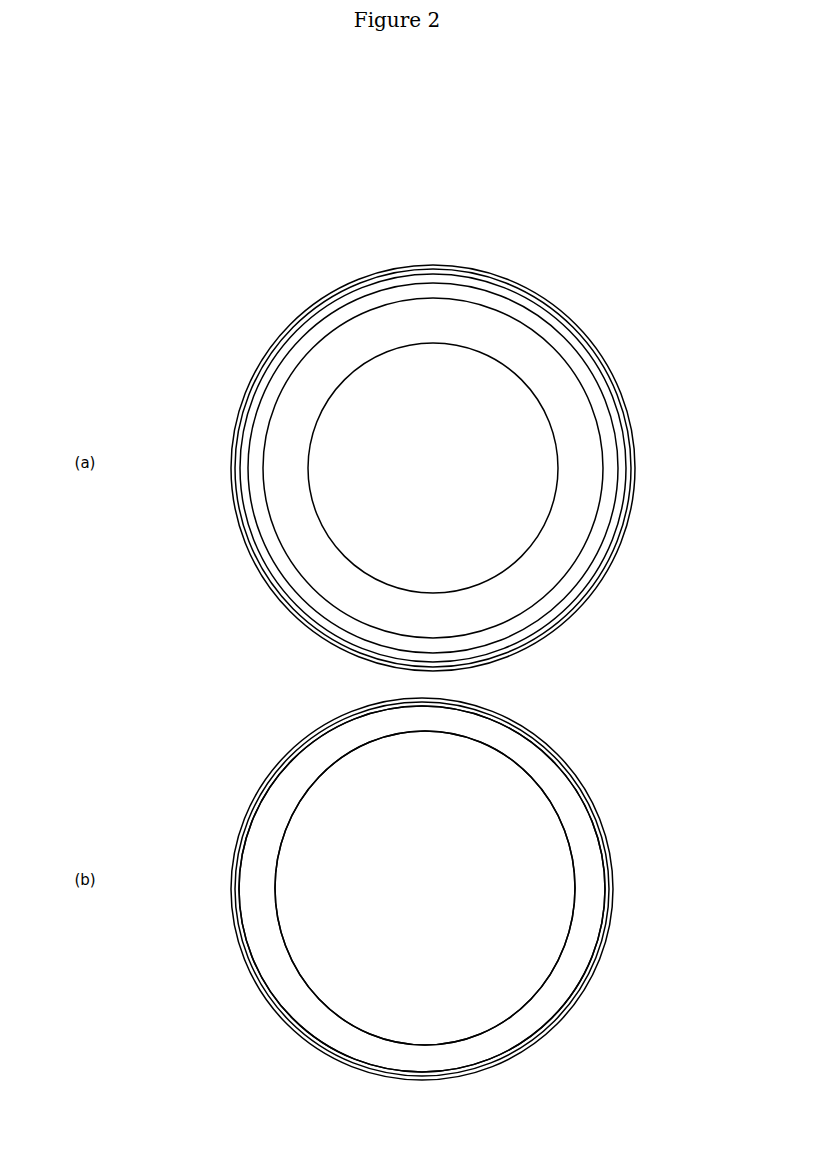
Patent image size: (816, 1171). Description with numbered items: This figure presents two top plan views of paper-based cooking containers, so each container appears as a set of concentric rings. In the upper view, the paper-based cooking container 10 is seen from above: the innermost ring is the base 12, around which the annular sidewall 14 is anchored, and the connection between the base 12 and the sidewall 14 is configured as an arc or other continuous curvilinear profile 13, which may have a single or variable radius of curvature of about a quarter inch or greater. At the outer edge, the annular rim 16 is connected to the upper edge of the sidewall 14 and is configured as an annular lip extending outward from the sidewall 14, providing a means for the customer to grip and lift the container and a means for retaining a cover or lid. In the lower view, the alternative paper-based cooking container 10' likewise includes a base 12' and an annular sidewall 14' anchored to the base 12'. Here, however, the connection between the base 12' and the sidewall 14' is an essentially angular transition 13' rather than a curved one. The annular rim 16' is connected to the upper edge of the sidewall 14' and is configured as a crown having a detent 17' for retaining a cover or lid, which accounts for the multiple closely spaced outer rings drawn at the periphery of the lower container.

The paper-based cooking container 10 is at (411, 468).
The base 12 is at (507, 474).
The continuous curvilinear profile 13 is at (484, 468).
The annular sidewall 14 is at (476, 468).
The annular rim 16 is at (449, 468).
The paper-based cooking container 10' is at (431, 889).
The base 12' is at (473, 895).
The angular transition 13' is at (493, 888).
The annular sidewall 14' is at (475, 889).
The annular rim 16' is at (471, 889).
The detent 17' is at (398, 889).